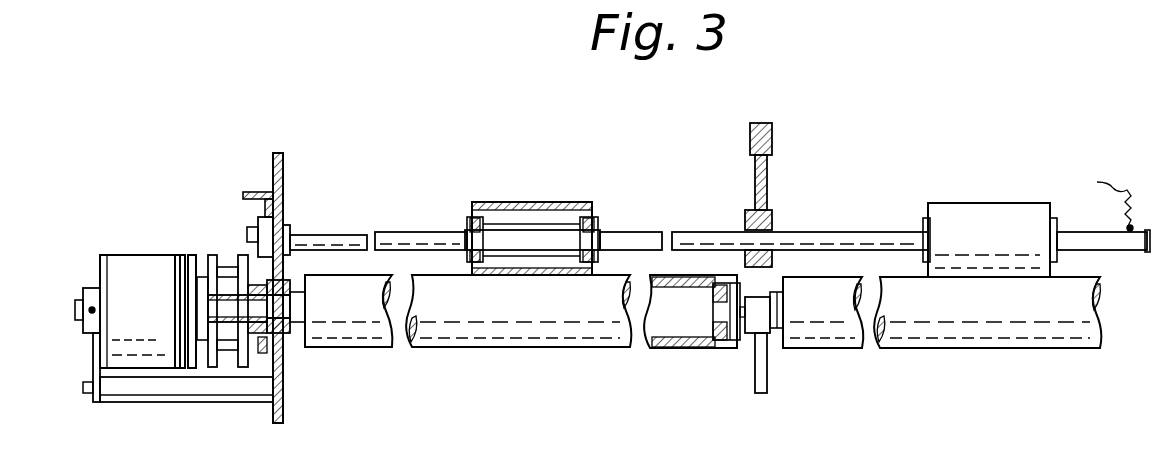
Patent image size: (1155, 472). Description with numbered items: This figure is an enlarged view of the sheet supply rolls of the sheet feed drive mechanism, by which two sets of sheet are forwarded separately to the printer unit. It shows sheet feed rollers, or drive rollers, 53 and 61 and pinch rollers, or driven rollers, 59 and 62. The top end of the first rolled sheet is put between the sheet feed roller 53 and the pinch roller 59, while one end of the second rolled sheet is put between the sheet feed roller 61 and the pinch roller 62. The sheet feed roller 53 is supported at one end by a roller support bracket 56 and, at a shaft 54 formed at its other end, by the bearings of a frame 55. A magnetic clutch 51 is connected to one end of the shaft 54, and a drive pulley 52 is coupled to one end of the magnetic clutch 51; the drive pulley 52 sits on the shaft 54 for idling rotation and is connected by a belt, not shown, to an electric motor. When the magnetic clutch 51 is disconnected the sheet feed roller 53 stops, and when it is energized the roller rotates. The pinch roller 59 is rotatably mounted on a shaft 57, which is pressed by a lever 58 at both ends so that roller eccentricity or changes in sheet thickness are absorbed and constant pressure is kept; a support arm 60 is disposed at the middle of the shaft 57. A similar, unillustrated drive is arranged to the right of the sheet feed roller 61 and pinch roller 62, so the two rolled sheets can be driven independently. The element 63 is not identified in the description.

The magnetic clutch 51 is at (135, 258).
The drive pulley 52 is at (230, 273).
The sheet feed roller 53 is at (520, 335).
The shaft 54 is at (295, 322).
The frame 55 is at (285, 407).
The roller support bracket 56 is at (755, 368).
The shaft 57 is at (337, 230).
The lever 58 is at (250, 192).
The pinch roller 59 is at (532, 202).
The support arm 60 is at (753, 178).
The sheet feed roller 61 is at (965, 340).
The pinch roller 62 is at (992, 212).
The lead 63 is at (1102, 197).